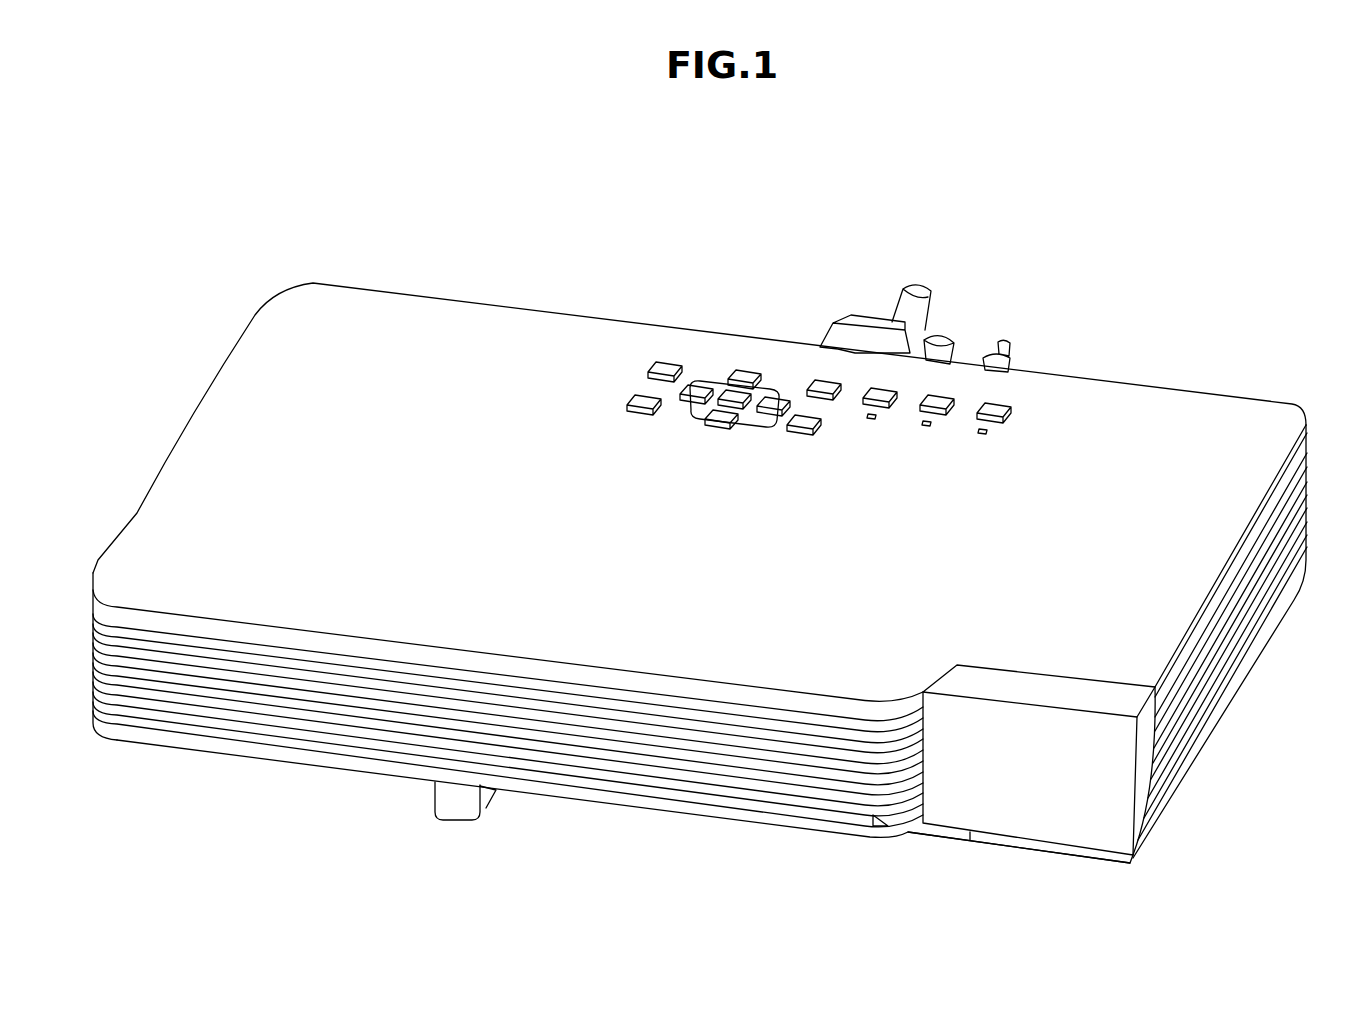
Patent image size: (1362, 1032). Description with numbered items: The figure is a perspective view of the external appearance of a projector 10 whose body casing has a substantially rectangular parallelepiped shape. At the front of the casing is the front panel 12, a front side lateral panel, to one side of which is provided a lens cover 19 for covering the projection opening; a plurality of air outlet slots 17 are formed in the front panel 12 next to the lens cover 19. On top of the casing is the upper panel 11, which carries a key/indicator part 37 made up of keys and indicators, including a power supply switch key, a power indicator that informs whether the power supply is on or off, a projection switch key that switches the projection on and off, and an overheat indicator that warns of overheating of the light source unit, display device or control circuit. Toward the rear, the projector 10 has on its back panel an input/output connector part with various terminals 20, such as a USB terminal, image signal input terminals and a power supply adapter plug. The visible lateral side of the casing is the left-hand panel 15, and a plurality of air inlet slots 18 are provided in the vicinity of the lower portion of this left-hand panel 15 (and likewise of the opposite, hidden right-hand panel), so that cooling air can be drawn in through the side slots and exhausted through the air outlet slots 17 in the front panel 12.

The projector 10 is at (662, 256).
The upper panel 11 is at (432, 341).
The front panel 12 is at (583, 778).
The left-hand panel 15 is at (1218, 688).
The air outlet slots 17 is at (690, 805).
The air inlet slots 18 is at (1250, 593).
The lens cover 19 is at (1067, 813).
The terminals 20 is at (944, 318).
The key/indicator part 37 is at (757, 351).